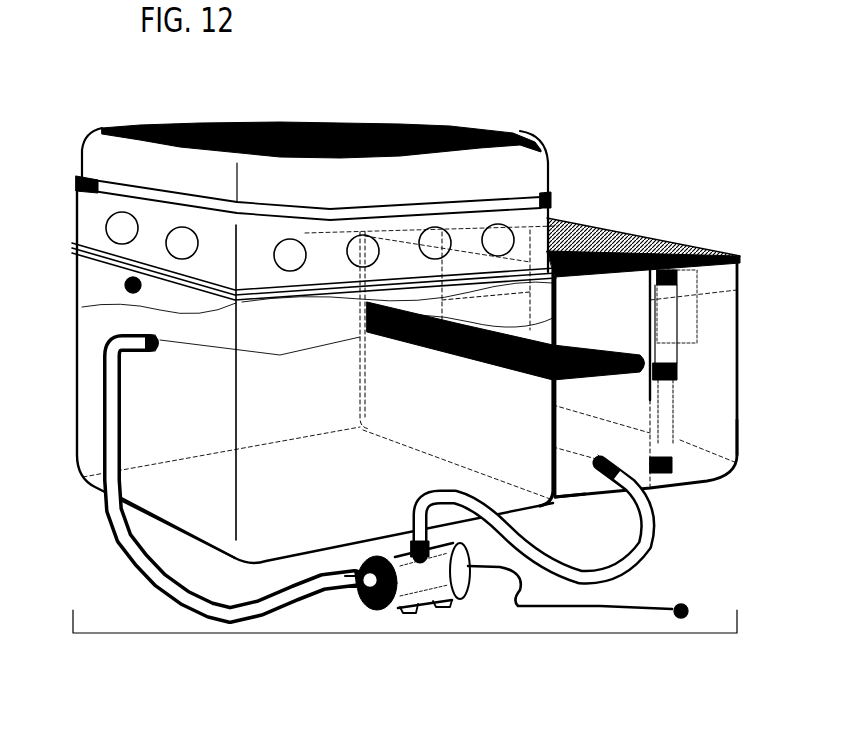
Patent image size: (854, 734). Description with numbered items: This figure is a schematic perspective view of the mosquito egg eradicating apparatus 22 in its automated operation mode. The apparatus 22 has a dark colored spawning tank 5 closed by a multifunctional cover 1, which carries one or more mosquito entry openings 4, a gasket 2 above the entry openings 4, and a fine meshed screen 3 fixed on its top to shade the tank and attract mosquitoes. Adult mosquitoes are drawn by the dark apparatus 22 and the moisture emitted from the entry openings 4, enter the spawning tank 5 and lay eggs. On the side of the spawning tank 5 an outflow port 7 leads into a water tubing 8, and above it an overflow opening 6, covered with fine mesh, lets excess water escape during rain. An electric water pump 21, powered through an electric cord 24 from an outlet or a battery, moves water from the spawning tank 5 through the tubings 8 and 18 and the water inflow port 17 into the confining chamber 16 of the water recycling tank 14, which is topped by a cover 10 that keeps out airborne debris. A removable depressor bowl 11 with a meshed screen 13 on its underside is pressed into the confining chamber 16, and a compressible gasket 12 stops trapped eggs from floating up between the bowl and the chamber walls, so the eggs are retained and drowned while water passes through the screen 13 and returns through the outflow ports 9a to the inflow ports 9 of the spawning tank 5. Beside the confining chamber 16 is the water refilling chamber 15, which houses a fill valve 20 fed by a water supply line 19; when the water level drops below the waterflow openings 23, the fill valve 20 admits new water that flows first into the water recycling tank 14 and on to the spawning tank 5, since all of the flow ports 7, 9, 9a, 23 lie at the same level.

The multifunctional cover 1 is at (513, 173).
The gasket 2 is at (76, 181).
The fine meshed screen 3 is at (100, 131).
The mosquito entry openings 4 is at (106, 229).
The spawning tank 5 is at (203, 532).
The overflow opening 6 is at (125, 286).
The outflow port 7 is at (128, 340).
The water tubing 8 is at (106, 402).
The inflow ports 9 is at (407, 348).
The outflow ports 9a is at (506, 370).
The cover 10 is at (687, 242).
The depressor bowl 11 is at (638, 360).
The gasket 12 is at (396, 328).
The meshed screen 13 is at (470, 352).
The water recycling tank 14 is at (637, 210).
The water refilling chamber 15 is at (715, 385).
The confining chamber 16 is at (568, 480).
The water inflow port 17 is at (592, 473).
The tubing 18 is at (655, 520).
The water supply line 19 is at (680, 437).
The fill valve 20 is at (670, 343).
The water pump 21 is at (470, 580).
The apparatus 22 is at (418, 640).
The waterflow openings 23 is at (683, 320).
The electric cord 24 is at (642, 607).